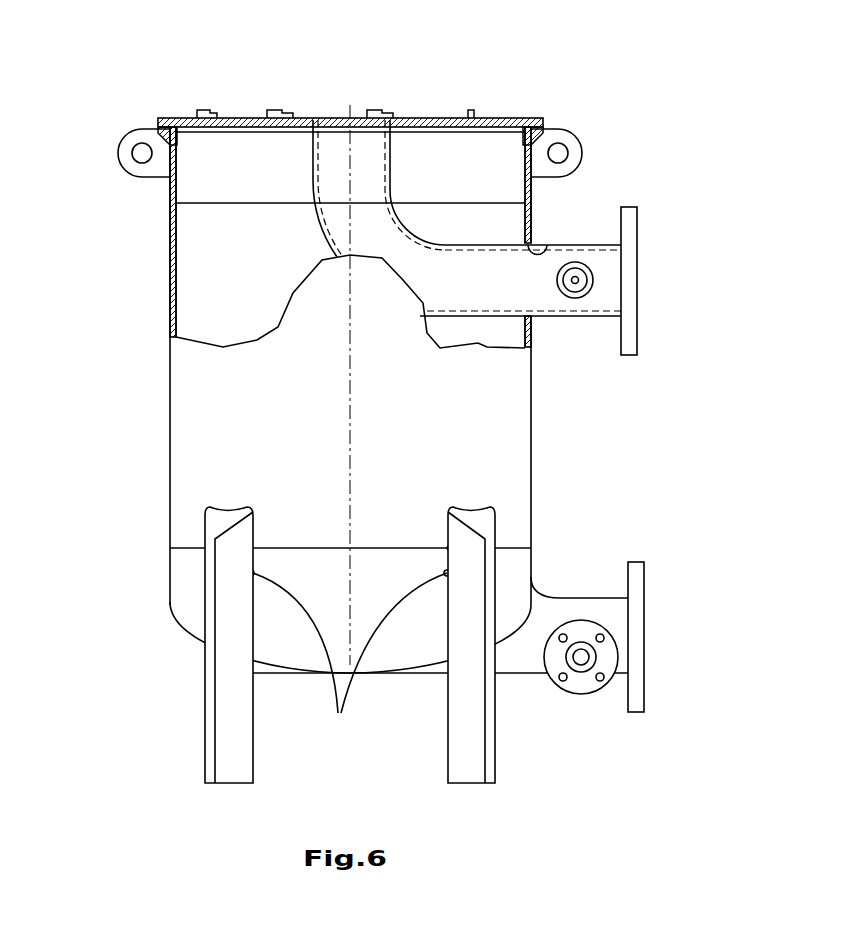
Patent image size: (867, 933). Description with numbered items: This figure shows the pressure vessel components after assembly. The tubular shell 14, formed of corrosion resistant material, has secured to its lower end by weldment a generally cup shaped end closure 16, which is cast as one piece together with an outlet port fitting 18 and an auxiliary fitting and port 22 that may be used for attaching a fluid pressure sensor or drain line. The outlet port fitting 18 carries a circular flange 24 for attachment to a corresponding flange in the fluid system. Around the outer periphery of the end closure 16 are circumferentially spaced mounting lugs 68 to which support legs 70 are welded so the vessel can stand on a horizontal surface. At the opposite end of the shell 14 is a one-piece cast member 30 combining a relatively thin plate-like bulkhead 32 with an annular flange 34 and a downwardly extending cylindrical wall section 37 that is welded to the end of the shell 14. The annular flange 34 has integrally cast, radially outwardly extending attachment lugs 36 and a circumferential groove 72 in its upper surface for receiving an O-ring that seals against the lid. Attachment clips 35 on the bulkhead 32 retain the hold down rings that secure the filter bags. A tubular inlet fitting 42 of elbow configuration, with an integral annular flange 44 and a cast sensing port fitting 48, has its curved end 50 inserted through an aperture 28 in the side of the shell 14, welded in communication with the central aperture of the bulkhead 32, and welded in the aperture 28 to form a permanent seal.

The tubular shell 14 is at (168, 373).
The end closure 16 is at (183, 628).
The outlet port fitting 18 is at (593, 598).
The auxiliary fitting and port 22 is at (573, 698).
The circular flange 24 is at (645, 585).
The aperture 28 is at (540, 243).
The combination bulkhead and annular flange member 30 is at (540, 78).
The bulkhead 32 is at (433, 118).
The annular flange 34 is at (545, 128).
The attachment clips 35 is at (207, 110).
The attachment lugs 36 is at (143, 138).
The cylindrical wall section 37 is at (170, 195).
The tubular inlet fitting 42 is at (572, 330).
The annular flange 44 is at (637, 222).
The sensing port fitting 48 is at (593, 282).
The curved end 50 is at (310, 158).
The mounting lugs 68 is at (349, 643).
The legs 70 is at (205, 747).
The circumferential groove 72 is at (165, 125).